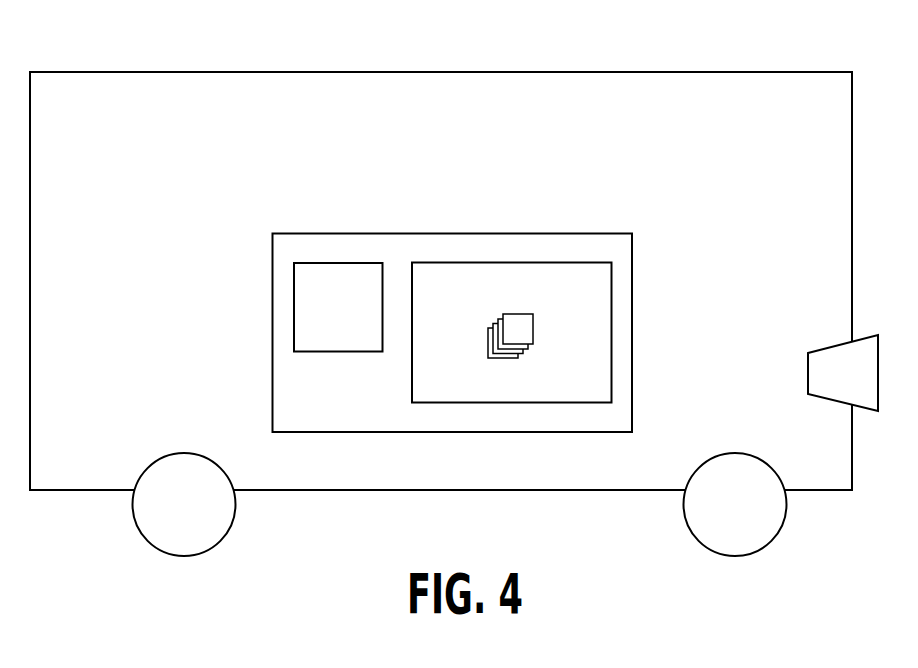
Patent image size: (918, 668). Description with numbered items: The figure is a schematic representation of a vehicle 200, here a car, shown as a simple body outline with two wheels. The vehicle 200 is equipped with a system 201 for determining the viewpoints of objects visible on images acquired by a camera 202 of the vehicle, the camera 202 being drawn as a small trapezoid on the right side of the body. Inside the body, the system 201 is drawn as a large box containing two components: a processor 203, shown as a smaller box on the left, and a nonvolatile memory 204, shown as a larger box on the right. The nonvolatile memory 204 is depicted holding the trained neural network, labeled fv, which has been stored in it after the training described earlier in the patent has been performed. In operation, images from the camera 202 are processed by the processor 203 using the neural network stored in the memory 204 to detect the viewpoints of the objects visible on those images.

The vehicle 200 is at (500, 72).
The system 201 is at (362, 233).
The camera 202 is at (843, 373).
The processor 203 is at (338, 307).
The nonvolatile memory 204 is at (412, 355).